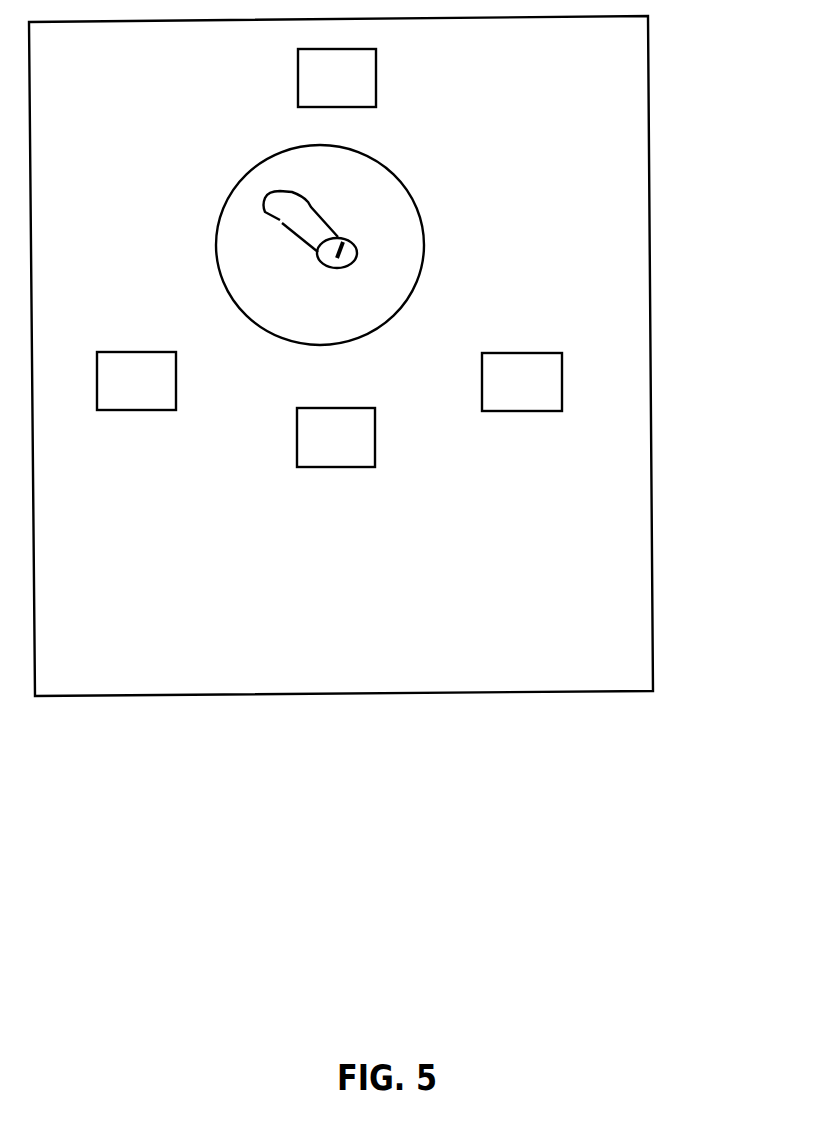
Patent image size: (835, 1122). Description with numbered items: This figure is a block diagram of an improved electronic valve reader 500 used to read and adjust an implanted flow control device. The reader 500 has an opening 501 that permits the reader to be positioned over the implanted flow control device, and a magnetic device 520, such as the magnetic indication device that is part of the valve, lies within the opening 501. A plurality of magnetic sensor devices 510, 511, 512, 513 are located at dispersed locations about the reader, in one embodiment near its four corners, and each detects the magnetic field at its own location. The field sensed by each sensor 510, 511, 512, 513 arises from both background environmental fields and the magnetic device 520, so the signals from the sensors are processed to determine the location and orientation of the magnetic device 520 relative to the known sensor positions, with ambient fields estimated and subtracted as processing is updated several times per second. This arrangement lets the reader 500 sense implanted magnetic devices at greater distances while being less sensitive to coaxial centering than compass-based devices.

The electronic valve reader 500 is at (403, 356).
The opening 501 is at (396, 245).
The magnetic sensor device 510 is at (393, 78).
The magnetic sensor device 511 is at (167, 363).
The magnetic sensor device 512 is at (370, 420).
The magnetic sensor device 513 is at (552, 362).
The magnetic device 520 is at (384, 215).